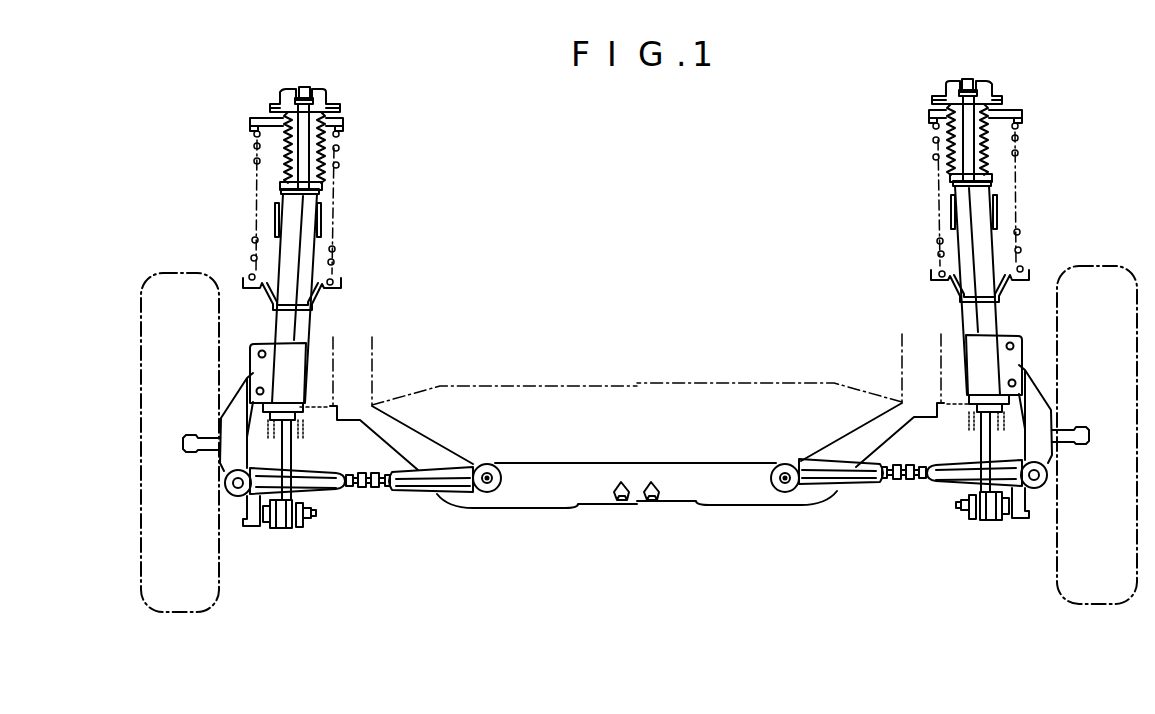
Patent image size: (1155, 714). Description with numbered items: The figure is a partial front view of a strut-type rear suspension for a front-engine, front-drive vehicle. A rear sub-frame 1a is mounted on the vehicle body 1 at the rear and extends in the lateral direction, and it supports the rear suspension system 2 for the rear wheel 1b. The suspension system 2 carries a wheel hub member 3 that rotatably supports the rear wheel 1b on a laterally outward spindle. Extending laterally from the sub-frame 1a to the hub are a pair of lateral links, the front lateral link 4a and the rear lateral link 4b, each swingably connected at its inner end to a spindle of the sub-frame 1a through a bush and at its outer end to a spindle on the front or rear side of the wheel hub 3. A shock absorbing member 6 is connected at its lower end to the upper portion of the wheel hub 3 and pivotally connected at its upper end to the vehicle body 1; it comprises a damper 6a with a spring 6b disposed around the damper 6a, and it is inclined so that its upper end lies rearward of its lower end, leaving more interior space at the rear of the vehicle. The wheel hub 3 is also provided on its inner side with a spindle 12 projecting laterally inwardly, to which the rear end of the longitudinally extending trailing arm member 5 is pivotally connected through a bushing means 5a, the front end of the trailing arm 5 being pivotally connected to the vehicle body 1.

The vehicle body 1 is at (637, 419).
The rear sub-frame 1a is at (584, 462).
The rear wheel 1b is at (158, 466).
The rear suspension system 2 is at (636, 326).
The wheel hub member 3 is at (240, 407).
The front lateral link 4a is at (423, 496).
The rear lateral link 4b is at (636, 500).
The trailing arm member 5 is at (291, 449).
The bushing means 5a is at (287, 528).
The shock absorbing member 6 is at (617, 241).
The damper 6a is at (290, 262).
The spring 6b is at (253, 160).
The spindle 12 is at (314, 515).